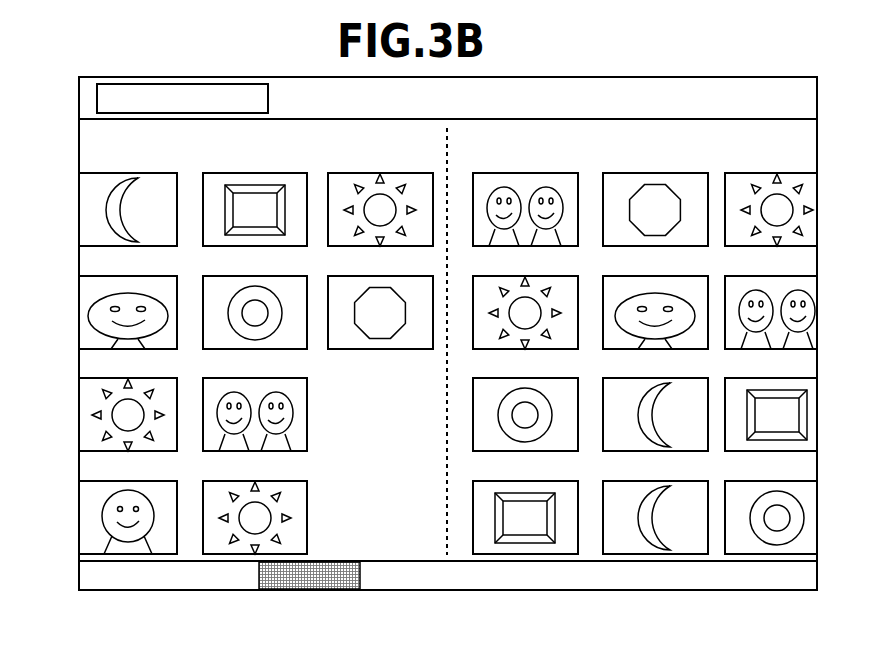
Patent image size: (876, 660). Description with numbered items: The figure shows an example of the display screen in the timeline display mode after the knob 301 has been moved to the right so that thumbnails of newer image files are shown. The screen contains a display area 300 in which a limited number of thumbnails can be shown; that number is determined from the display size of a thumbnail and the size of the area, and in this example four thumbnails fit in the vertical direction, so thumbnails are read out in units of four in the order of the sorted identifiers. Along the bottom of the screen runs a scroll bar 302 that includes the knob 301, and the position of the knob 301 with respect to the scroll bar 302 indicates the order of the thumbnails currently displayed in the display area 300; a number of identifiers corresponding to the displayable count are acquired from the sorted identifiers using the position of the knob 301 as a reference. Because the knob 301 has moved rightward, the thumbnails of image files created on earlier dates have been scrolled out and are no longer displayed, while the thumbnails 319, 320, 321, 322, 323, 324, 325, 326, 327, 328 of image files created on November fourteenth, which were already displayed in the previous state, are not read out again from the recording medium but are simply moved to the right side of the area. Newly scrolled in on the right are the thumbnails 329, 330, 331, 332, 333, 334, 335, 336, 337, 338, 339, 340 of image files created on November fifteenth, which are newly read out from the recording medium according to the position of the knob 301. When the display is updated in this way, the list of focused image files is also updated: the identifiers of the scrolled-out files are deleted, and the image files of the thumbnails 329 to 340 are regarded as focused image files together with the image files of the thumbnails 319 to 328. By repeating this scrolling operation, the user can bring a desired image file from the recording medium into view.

The display area 300 is at (79, 268).
The knob 301 is at (259, 572).
The scroll bar 302 is at (97, 100).
The thumbnail 319 is at (100, 172).
The thumbnail 320 is at (100, 275).
The thumbnail 321 is at (100, 377).
The thumbnail 322 is at (100, 480).
The thumbnail 323 is at (239, 172).
The thumbnail 324 is at (239, 275).
The thumbnail 325 is at (239, 377).
The thumbnail 326 is at (239, 480).
The thumbnail 327 is at (358, 172).
The thumbnail 328 is at (358, 275).
The thumbnail 329 is at (505, 172).
The thumbnail 330 is at (505, 275).
The thumbnail 331 is at (505, 377).
The thumbnail 332 is at (505, 480).
The thumbnail 333 is at (635, 172).
The thumbnail 334 is at (635, 275).
The thumbnail 335 is at (635, 377).
The thumbnail 336 is at (635, 480).
The thumbnail 337 is at (740, 172).
The thumbnail 338 is at (740, 275).
The thumbnail 339 is at (740, 377).
The thumbnail 340 is at (740, 480).